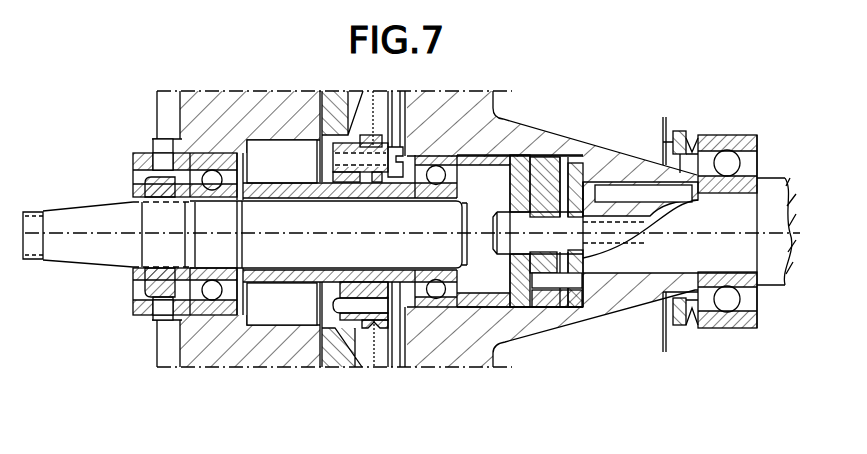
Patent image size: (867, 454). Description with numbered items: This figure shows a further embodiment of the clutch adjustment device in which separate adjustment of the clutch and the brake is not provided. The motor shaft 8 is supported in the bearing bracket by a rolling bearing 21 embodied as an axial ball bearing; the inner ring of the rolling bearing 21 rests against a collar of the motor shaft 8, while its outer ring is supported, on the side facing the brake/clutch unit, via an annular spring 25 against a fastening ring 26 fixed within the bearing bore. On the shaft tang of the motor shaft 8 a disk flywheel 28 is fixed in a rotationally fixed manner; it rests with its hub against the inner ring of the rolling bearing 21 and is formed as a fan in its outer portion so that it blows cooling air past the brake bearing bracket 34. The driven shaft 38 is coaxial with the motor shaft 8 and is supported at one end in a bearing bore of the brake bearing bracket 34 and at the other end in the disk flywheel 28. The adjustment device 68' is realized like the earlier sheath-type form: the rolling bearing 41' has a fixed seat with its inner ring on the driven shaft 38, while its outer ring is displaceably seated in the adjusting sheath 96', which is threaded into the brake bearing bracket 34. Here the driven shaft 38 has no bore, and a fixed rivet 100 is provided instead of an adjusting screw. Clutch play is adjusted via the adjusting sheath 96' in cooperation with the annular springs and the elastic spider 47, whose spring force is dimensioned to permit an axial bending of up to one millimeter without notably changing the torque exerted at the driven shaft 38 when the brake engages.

The brake bearing bracket 34 is at (215, 107).
The driven shaft 38 is at (70, 215).
The brake adjustment device 68' is at (149, 248).
The adjusting sheath 96' is at (137, 298).
The rolling bearing 41' is at (206, 287).
The axially resilient spider 47 is at (378, 350).
The fixed rivet 100 is at (500, 210).
The disk flywheel 28 is at (558, 138).
The fastening ring 26 is at (678, 131).
The annular spring 25 is at (695, 136).
The rolling bearing 21 is at (737, 127).
The motor shaft 8 is at (768, 185).